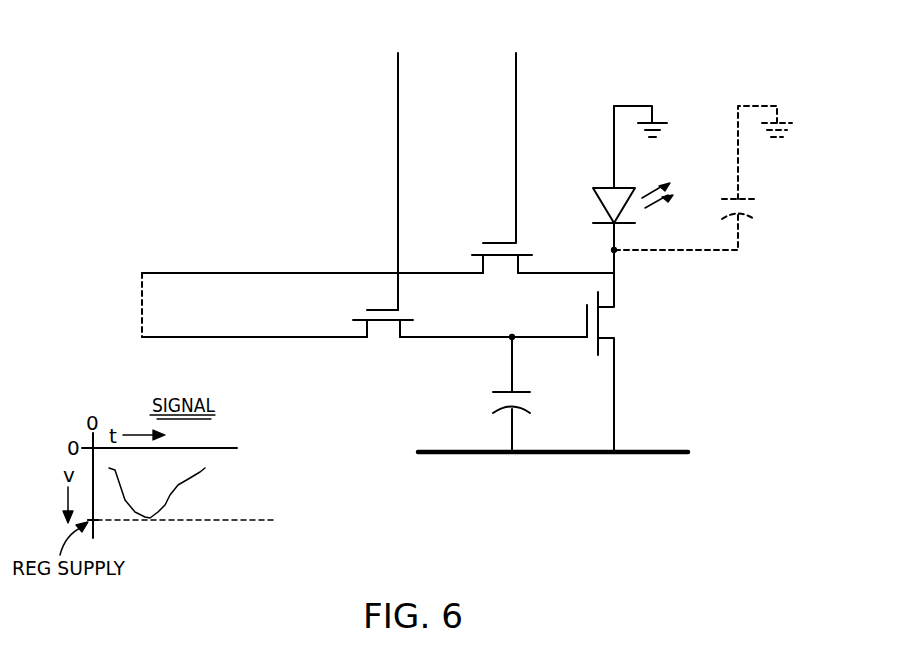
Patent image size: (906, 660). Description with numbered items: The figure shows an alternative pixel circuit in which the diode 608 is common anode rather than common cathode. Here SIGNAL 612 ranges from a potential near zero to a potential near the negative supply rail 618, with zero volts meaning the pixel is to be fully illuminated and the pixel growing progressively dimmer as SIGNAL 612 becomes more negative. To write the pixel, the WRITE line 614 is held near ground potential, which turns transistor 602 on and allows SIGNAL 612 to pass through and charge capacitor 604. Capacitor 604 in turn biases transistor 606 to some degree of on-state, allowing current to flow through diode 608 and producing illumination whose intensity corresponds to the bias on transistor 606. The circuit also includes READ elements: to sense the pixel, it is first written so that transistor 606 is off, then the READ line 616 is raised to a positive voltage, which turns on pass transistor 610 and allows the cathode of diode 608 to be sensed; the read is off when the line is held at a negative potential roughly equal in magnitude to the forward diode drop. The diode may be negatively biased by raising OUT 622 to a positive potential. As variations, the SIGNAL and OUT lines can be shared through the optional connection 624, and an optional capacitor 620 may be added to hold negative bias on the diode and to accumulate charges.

The transistor 602 is at (380, 333).
The capacitor 604 is at (523, 392).
The transistor 606 is at (607, 321).
The diode 608 is at (618, 186).
The pass transistor 610 is at (498, 268).
The SIGNAL 612 is at (155, 337).
The WRITE line 614 is at (398, 65).
The READ line 616 is at (516, 65).
The negative supply rail 618 is at (670, 452).
The optional capacitor 620 is at (750, 200).
The OUT 622 is at (155, 273).
The optional connection 624 is at (128, 301).